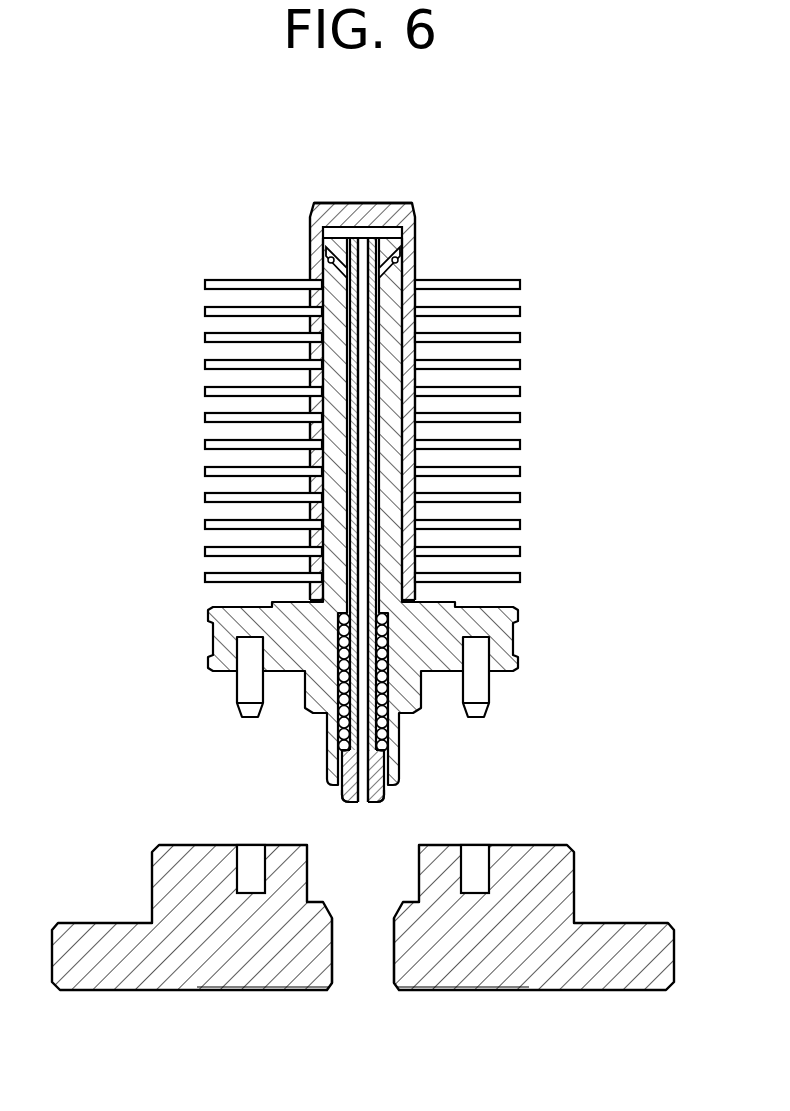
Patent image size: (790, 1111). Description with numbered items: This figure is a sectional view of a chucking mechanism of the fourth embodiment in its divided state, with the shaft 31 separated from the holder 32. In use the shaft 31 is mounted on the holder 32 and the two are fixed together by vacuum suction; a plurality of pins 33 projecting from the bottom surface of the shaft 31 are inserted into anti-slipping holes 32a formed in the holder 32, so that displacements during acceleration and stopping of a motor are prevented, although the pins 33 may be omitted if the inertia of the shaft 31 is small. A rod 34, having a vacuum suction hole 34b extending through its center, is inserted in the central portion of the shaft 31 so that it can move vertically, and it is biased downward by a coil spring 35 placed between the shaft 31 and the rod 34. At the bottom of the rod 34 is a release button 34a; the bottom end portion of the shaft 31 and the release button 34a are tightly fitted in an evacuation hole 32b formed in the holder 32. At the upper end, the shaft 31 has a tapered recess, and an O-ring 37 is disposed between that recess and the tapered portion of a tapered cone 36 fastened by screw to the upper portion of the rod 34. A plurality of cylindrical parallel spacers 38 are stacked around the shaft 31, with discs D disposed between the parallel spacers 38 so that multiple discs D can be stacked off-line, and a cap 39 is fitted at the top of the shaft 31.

The shaft 31 is at (209, 614).
The holder 32 is at (153, 884).
The anti-slipping hole 32a is at (474, 853).
The evacuation hole 32b is at (371, 906).
The pin 33 is at (490, 690).
The rod 34 is at (345, 768).
The release button 34a is at (347, 797).
The vacuum suction hole 34b is at (365, 456).
The coil spring 35 is at (389, 742).
The tapered cone 36 is at (416, 249).
The O-ring 37 is at (324, 263).
The parallel spacer 38 is at (418, 302).
The cap 39 is at (362, 202).
The disc D is at (514, 280).